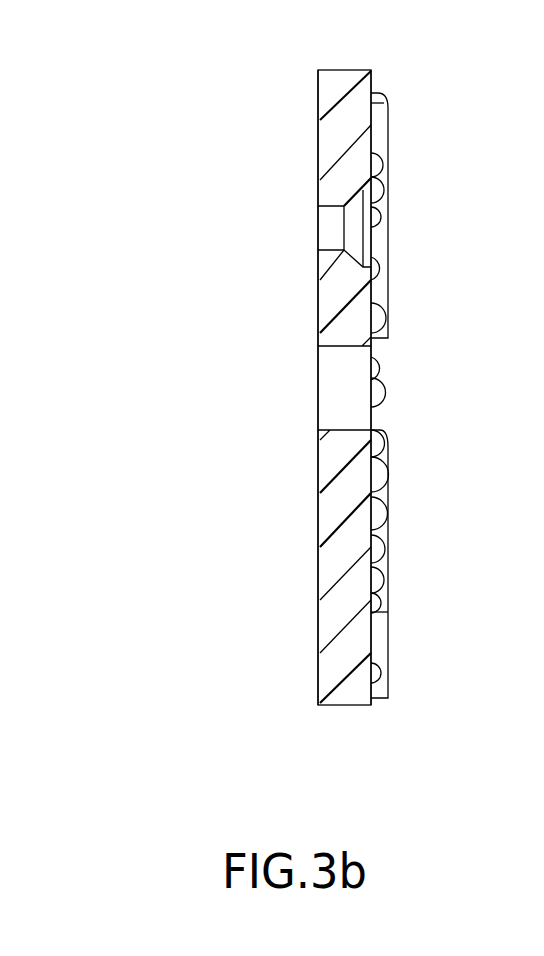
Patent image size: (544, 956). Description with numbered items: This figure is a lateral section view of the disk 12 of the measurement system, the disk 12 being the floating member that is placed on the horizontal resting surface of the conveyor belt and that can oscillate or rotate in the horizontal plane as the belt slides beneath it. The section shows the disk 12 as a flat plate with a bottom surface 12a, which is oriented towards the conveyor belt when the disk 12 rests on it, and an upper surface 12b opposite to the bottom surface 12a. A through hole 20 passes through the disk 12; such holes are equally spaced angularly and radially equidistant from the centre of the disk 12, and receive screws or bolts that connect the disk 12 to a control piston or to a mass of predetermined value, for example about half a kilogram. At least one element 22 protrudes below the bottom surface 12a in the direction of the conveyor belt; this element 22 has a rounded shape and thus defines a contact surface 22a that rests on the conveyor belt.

The disk 12 is at (360, 725).
The bottom surface 12a is at (389, 698).
The upper surface 12b is at (318, 690).
The through hole 20 is at (343, 250).
The element 22 is at (390, 133).
The contact surface 22a is at (389, 612).